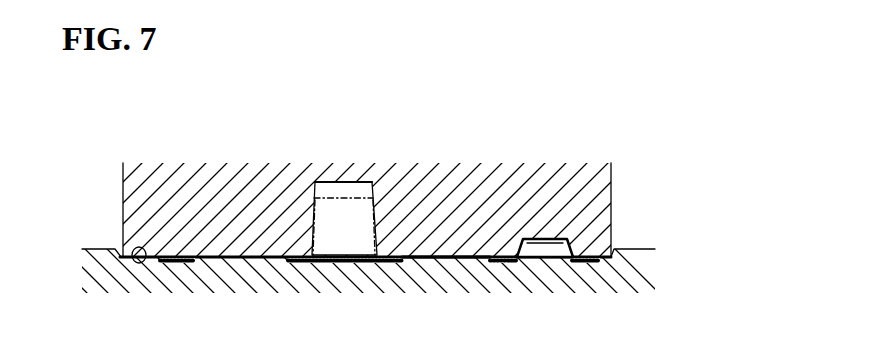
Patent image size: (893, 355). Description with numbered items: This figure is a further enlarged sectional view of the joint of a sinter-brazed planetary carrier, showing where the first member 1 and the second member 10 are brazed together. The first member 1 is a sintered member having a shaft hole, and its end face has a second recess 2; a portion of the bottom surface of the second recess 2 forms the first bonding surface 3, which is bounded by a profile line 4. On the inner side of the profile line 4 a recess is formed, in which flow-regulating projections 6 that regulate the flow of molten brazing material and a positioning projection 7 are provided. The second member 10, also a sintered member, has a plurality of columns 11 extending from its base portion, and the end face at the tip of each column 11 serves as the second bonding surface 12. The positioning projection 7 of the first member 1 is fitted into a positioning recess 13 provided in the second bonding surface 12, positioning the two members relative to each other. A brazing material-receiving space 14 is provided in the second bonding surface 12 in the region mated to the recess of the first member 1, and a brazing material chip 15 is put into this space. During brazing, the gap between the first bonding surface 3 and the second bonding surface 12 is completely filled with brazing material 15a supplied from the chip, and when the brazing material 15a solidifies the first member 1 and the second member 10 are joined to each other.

The first member 1 is at (656, 271).
The second recess 2 is at (614, 251).
The first bonding surface 3 is at (146, 262).
The profile line 4 is at (402, 264).
The flow-regulating projection 6 is at (479, 263).
The positioning projection 7 is at (538, 258).
The second member 10 is at (487, 160).
The column 11 is at (600, 183).
The second bonding surface 12 is at (191, 263).
The positioning recess 13 is at (568, 238).
The brazing material-receiving space 14 is at (344, 190).
The brazing material chip 15 is at (300, 256).
The brazing material 15a is at (343, 263).